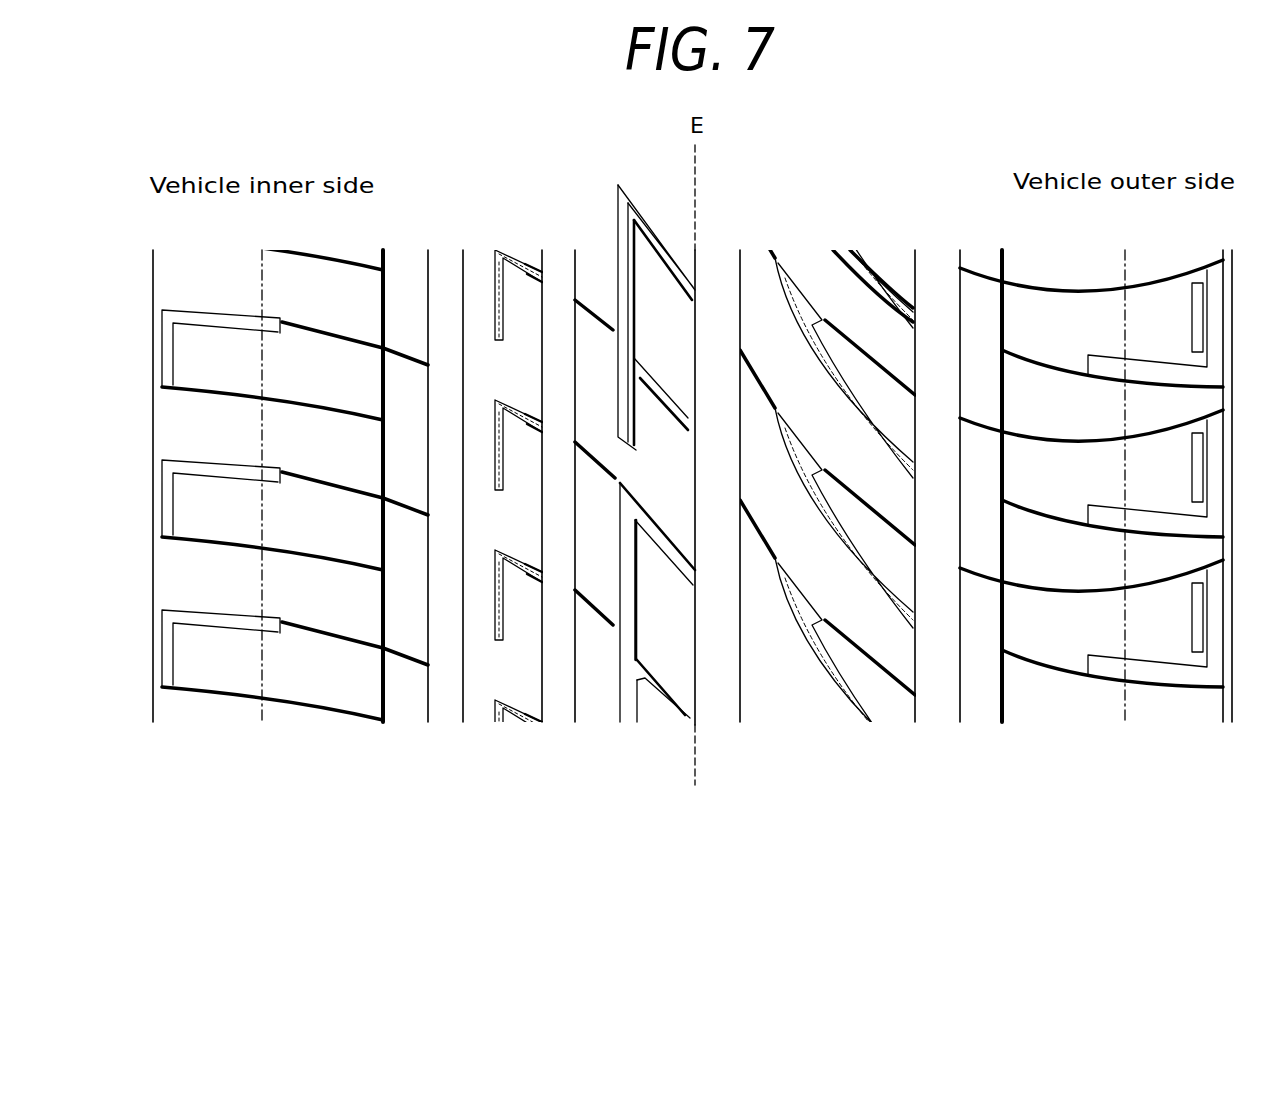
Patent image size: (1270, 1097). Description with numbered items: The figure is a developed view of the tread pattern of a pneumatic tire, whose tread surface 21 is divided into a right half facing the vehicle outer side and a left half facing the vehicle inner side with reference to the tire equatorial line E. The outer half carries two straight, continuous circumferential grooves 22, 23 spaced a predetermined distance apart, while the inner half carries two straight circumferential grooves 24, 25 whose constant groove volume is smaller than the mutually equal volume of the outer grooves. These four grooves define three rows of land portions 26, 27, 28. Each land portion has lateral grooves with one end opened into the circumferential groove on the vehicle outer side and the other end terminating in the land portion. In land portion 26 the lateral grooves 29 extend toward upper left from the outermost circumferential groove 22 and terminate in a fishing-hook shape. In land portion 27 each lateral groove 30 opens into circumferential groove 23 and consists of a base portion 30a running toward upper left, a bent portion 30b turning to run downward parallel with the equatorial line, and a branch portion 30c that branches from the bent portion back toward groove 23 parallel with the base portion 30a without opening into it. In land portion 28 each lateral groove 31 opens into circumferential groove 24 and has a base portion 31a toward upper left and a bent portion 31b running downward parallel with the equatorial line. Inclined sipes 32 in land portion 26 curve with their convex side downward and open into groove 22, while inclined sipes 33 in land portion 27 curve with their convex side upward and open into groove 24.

The tread surface 21 is at (265, 800).
The circumferential groove 22 is at (940, 708).
The circumferential groove 23 is at (718, 708).
The circumferential groove 24 is at (560, 708).
The circumferential groove 25 is at (445, 708).
The land portion 26 is at (869, 414).
The land portion 27 is at (665, 434).
The land portion 28 is at (440, 478).
The lateral groove 29 is at (873, 270).
The lateral groove 30 is at (665, 434).
The base portion 30a is at (677, 242).
The bent portion 30b is at (617, 322).
The branch portion 30c is at (656, 358).
The lateral groove 31 is at (440, 487).
The base portion 31a is at (525, 275).
The bent portion 31b is at (495, 445).
The inclined sipe 32 is at (848, 487).
The inclined sipe 33 is at (602, 468).